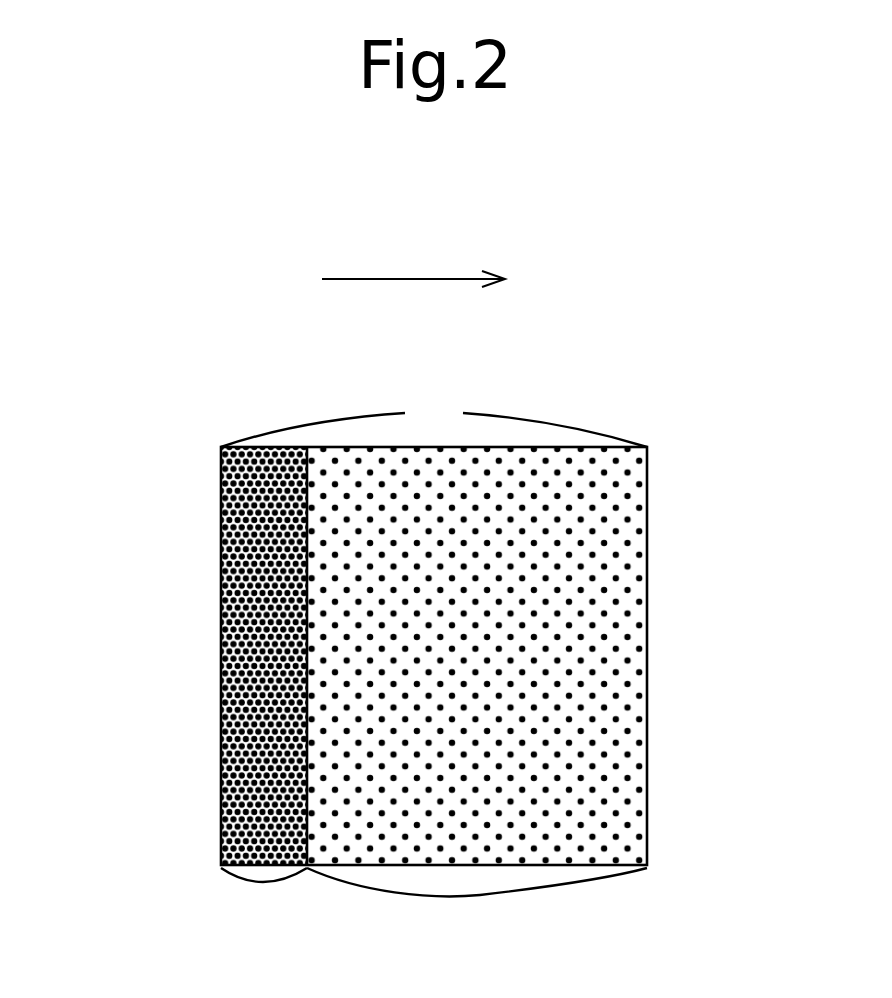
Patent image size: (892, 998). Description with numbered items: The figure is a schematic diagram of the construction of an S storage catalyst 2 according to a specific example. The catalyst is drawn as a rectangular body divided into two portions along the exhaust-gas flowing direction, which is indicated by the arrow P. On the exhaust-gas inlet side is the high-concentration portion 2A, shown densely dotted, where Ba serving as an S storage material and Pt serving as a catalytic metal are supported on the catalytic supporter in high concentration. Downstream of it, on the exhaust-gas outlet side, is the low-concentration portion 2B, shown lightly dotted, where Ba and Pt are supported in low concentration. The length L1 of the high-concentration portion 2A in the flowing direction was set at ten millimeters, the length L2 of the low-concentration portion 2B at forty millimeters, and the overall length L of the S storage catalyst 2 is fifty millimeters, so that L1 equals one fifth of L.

The S storage catalyst 2 is at (621, 407).
The high-concentration portion 2A is at (221, 660).
The low-concentration portion 2B is at (630, 667).
The overall length L is at (434, 417).
The length of the high-concentration portion L1 is at (264, 906).
The length of the low-concentration portion L2 is at (477, 911).
The arrow indicating exhaust-gas flowing direction P is at (400, 276).